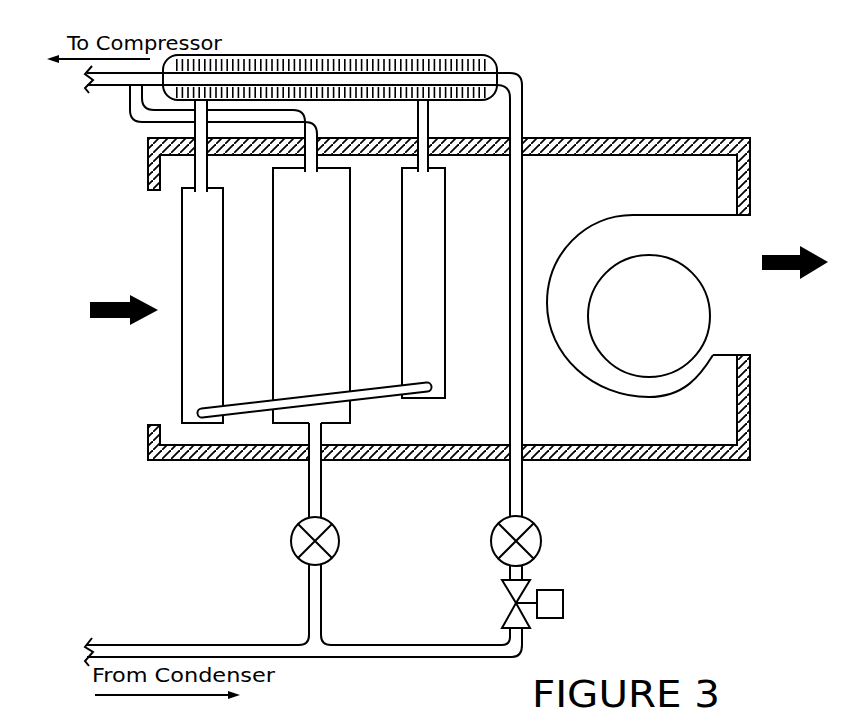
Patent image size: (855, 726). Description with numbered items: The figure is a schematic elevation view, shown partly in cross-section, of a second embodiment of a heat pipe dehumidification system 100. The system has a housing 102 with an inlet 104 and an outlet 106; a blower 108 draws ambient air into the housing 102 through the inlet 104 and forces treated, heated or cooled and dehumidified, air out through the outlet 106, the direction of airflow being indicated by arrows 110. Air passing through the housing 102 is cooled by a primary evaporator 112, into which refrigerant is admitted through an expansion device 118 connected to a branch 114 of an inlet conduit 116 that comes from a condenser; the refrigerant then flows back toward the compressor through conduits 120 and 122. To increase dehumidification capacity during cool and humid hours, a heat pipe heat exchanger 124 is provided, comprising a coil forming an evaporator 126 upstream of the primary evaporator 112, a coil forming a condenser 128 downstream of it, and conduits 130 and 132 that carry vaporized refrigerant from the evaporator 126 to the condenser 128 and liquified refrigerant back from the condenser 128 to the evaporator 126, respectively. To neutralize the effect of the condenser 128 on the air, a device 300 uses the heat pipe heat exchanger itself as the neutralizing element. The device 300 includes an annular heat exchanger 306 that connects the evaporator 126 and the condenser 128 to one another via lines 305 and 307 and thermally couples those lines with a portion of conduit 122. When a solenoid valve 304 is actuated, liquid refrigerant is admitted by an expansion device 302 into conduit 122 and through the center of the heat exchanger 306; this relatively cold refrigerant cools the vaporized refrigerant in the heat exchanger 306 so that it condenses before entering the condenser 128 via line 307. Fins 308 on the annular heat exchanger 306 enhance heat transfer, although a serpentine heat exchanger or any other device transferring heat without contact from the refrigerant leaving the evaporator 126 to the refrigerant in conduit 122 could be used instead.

The heat pipe dehumidification system 100 is at (126, 473).
The housing 102 is at (750, 417).
The inlet 104 is at (160, 190).
The outlet 106 is at (740, 356).
The blower 108 is at (656, 397).
The arrows 110 is at (118, 318).
The primary evaporator 112 is at (320, 276).
The branch 114 is at (309, 597).
The inlet conduit 116 is at (212, 645).
The expansion device 118 is at (288, 541).
The conduit 120 is at (319, 133).
The conduit 122 is at (500, 72).
The heat pipe heat exchanger 124 is at (176, 235).
The evaporator 126 is at (215, 287).
The condenser 128 is at (440, 276).
The conduit 130 is at (248, 220).
The conduit 132 is at (262, 400).
The device 300 is at (581, 502).
The expansion device 302 is at (492, 541).
The solenoid valve 304 is at (502, 616).
The line 305 is at (193, 175).
The heat exchanger 306 is at (272, 56).
The line 307 is at (428, 133).
The fins 308 is at (413, 63).